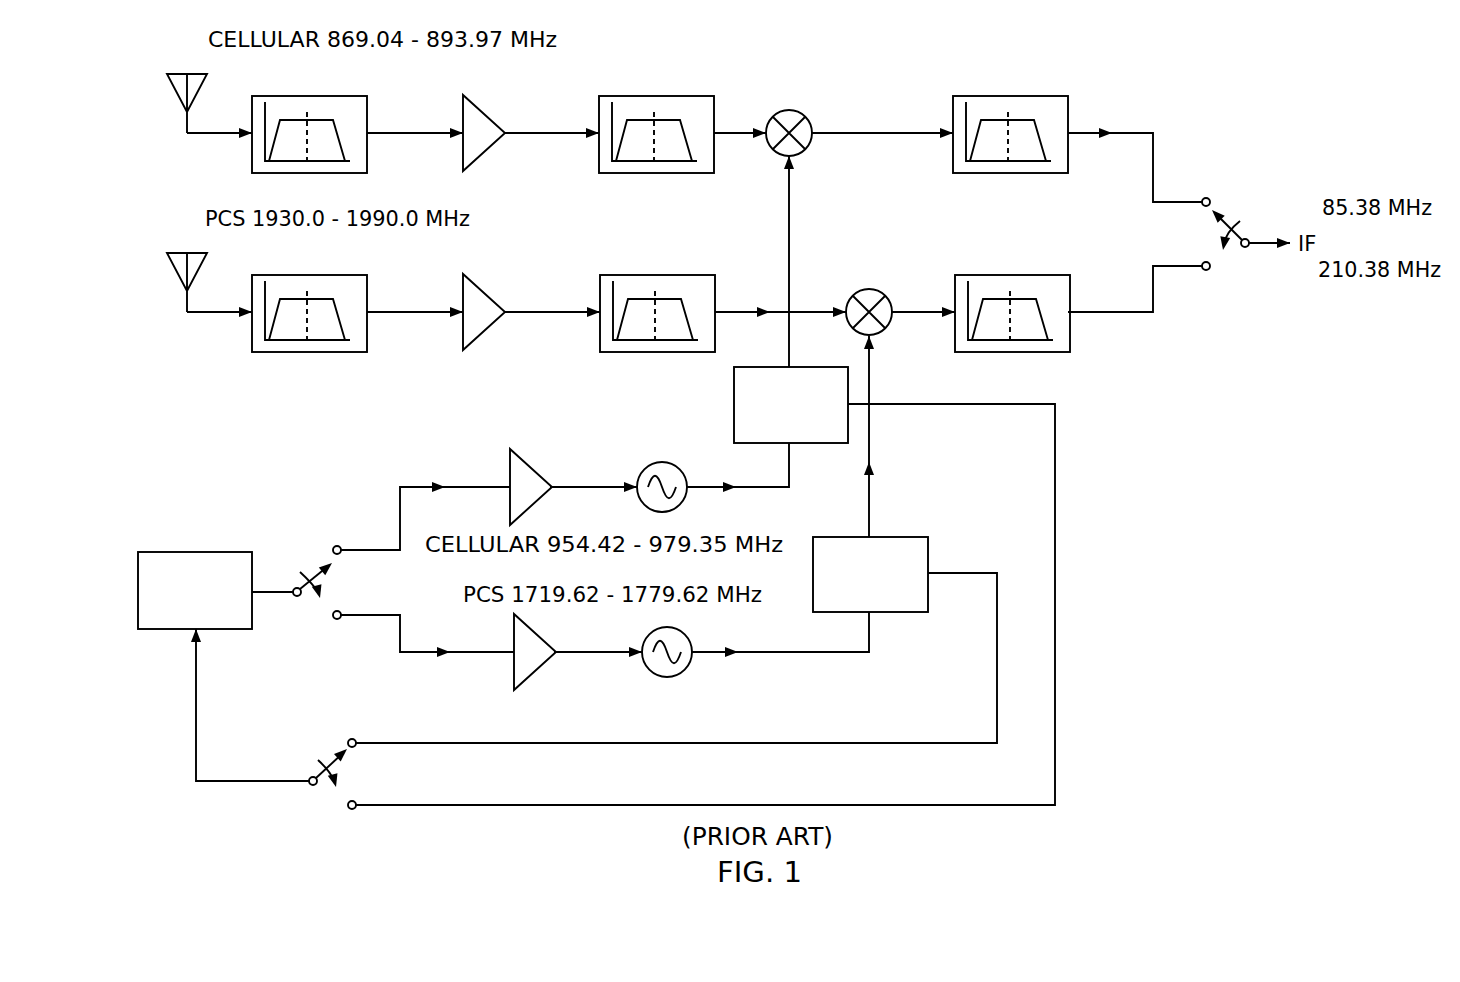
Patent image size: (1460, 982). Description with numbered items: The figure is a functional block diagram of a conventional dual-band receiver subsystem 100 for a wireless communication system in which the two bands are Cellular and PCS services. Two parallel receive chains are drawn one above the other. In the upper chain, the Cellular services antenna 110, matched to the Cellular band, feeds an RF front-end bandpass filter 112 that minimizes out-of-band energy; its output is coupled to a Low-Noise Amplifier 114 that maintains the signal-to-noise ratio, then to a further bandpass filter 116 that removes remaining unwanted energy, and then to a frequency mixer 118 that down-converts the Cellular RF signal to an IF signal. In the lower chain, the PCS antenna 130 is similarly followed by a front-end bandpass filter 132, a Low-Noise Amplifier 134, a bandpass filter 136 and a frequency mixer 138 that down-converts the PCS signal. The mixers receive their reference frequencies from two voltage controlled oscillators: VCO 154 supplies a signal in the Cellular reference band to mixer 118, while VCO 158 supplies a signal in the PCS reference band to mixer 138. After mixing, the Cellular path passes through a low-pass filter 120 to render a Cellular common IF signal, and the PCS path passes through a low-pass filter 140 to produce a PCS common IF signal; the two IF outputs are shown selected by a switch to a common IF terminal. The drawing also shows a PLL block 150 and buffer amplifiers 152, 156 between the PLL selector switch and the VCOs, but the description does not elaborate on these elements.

The receiver subsystem 100 is at (1286, 665).
The Cellular services antenna 110 is at (172, 100).
The RF front-end bandpass filter 112 is at (315, 96).
The Low-Noise Amplifier 114 is at (480, 110).
The bandpass filter 116 is at (668, 96).
The frequency mixer 118 is at (788, 110).
The low-pass filter 120 is at (1033, 96).
The PCS antenna 130 is at (172, 279).
The RF front-end bandpass filter 132 is at (315, 275).
The Low-Noise Amplifier 134 is at (480, 290).
The bandpass filter 136 is at (663, 275).
The frequency mixer 138 is at (868, 289).
The low-pass filter 140 is at (1037, 275).
The phase locked loop 150 is at (205, 552).
The cellular LO buffer amplifier 152 is at (525, 462).
The VCO 154 is at (660, 462).
The PCS LO buffer amplifier 156 is at (528, 678).
The VCO 158 is at (667, 677).